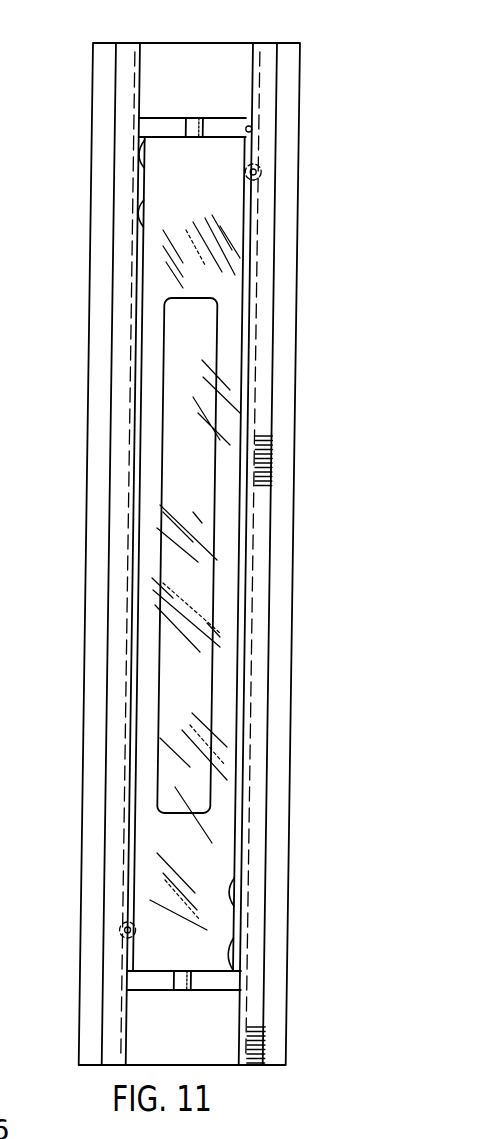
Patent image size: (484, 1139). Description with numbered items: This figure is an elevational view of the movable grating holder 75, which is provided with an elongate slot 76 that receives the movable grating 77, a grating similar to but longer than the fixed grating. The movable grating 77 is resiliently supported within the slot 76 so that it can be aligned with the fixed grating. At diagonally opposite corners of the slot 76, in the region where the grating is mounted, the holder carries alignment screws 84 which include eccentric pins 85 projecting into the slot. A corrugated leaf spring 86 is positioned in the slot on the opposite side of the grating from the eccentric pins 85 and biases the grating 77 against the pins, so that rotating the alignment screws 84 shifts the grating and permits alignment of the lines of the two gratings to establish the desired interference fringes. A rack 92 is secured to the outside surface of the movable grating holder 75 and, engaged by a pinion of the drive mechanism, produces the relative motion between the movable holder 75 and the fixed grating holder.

The movable grating holder 75 is at (68, 67).
The elongate slot 76 is at (252, 130).
The movable grating 77 is at (153, 281).
The alignment screws 84 is at (266, 170).
The eccentric pins 85 is at (257, 179).
The corrugated leaf spring 86 is at (145, 163).
The rack 92 is at (265, 1049).